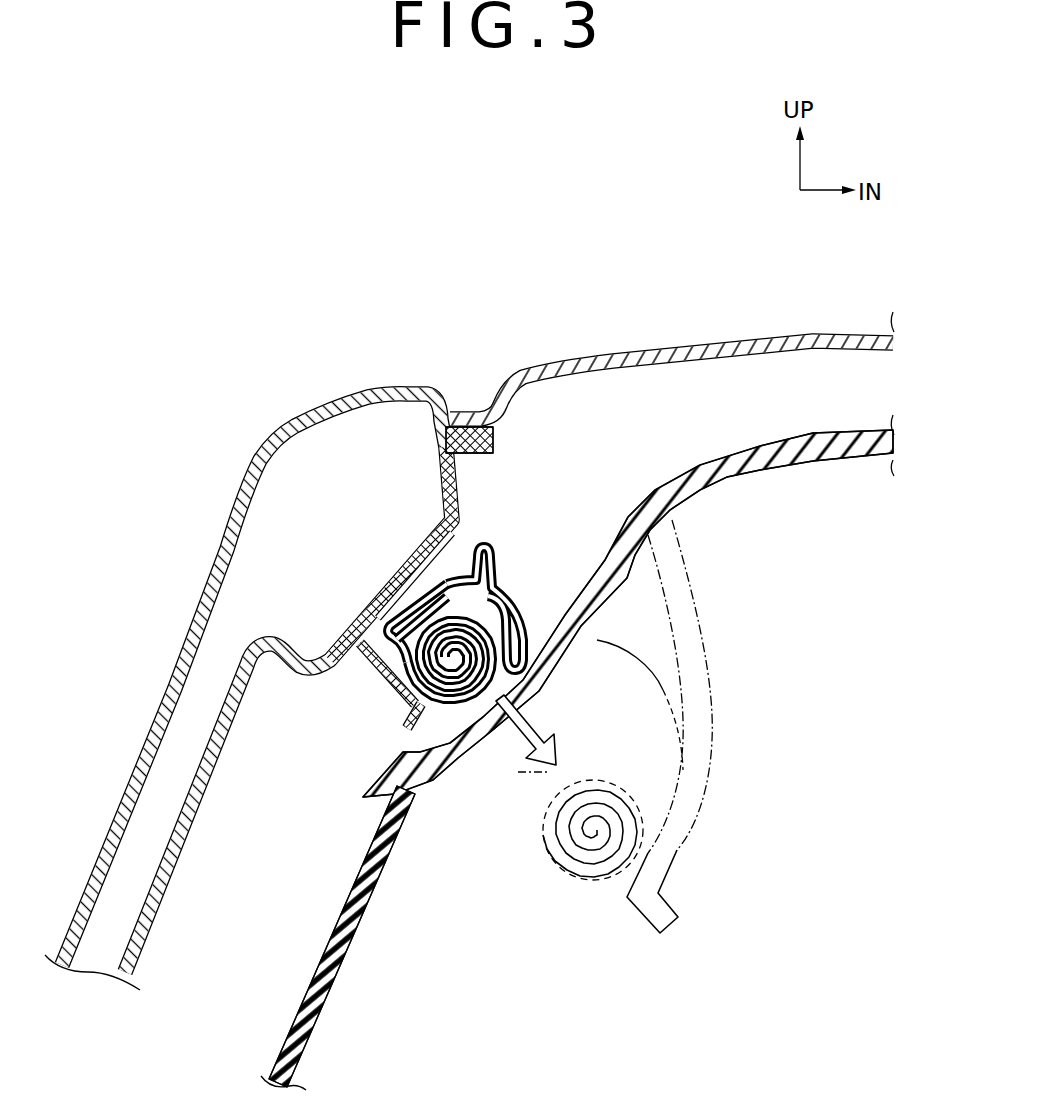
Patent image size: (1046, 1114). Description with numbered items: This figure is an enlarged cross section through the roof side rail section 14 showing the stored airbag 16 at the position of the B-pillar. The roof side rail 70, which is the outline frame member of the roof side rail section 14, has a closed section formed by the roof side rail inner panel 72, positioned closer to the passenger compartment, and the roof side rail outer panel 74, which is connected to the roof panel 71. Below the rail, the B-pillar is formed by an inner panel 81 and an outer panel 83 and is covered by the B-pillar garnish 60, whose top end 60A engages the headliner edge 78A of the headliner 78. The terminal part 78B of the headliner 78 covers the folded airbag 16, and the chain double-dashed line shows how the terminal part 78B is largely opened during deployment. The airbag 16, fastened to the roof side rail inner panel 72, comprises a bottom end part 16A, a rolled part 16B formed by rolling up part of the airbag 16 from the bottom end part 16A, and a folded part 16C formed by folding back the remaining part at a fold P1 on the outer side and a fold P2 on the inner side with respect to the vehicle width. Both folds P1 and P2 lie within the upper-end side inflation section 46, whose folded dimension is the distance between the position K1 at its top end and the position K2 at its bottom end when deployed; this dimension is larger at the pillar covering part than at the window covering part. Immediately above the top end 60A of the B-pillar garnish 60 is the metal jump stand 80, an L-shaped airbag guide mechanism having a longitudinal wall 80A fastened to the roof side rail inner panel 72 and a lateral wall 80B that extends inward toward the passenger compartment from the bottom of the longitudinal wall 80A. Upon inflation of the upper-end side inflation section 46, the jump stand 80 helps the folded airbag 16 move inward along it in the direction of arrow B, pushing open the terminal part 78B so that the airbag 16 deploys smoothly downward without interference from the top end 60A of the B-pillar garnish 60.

The roof side rail section 14 is at (350, 388).
The airbag 16 is at (536, 730).
The bottom end part 16A is at (396, 692).
The rolled part 16B is at (443, 712).
The folded part 16C is at (510, 608).
The upper-end side inflation section 46 is at (425, 553).
The B-pillar garnish 60 is at (342, 975).
The top end of the B-pillar garnish 60A is at (410, 800).
The roof side rail 70 is at (283, 443).
The roof panel 71 is at (727, 340).
The roof side rail inner panel 72 is at (297, 670).
The roof side rail outer panel 74 is at (222, 516).
The headliner 78 is at (714, 494).
The headliner edge 78A is at (372, 792).
The terminal part 78B is at (530, 703).
The jump stand 80 is at (392, 690).
The longitudinal wall 80A is at (462, 548).
The lateral wall (guide wall) 80B is at (408, 712).
The inner panel 81 is at (198, 812).
The outer panel 83 is at (143, 760).
The arrow B is at (522, 768).
The position K1 is at (458, 554).
The position K2 is at (440, 583).
The fold P1 is at (432, 606).
The fold P2 is at (530, 690).